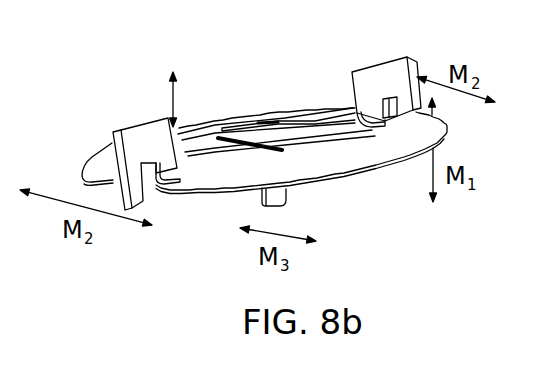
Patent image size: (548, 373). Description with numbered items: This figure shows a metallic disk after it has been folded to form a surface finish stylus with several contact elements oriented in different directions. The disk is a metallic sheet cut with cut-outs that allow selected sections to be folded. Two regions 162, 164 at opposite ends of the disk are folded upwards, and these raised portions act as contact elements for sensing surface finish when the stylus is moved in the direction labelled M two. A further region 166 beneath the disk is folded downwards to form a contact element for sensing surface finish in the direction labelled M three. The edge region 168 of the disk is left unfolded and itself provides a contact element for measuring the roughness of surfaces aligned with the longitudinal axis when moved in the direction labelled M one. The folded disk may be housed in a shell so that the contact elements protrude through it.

The region 162 is at (392, 67).
The region 164 is at (124, 129).
The region 166 is at (287, 197).
The edge region 168 is at (402, 200).